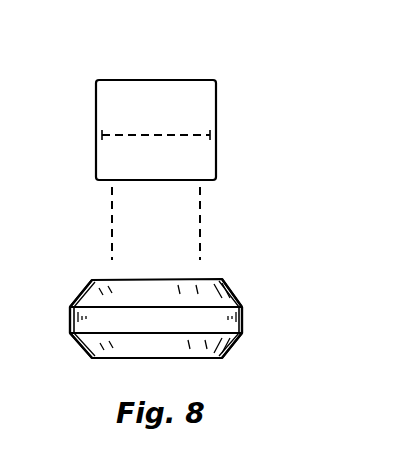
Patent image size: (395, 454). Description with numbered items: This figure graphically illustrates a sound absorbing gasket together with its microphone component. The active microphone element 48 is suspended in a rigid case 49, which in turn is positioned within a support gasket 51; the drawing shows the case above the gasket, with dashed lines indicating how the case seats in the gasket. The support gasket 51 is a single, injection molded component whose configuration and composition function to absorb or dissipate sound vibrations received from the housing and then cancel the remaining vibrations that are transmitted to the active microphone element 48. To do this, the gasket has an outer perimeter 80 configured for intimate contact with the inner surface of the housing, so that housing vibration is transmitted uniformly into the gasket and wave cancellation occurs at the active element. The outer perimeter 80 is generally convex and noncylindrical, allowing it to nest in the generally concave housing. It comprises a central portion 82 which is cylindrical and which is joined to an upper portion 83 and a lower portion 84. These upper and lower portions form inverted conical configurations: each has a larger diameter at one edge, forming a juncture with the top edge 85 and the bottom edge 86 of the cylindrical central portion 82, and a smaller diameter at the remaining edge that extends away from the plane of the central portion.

The rigid case 49 is at (151, 92).
The active microphone element 48 is at (187, 135).
The support gasket 51 is at (232, 279).
The upper portion 83 is at (84, 290).
The central portion 82 is at (69, 322).
The lower portion 84 is at (80, 343).
The top edge 85 is at (243, 306).
The outer perimeter 80 is at (243, 325).
The bottom edge 86 is at (242, 334).